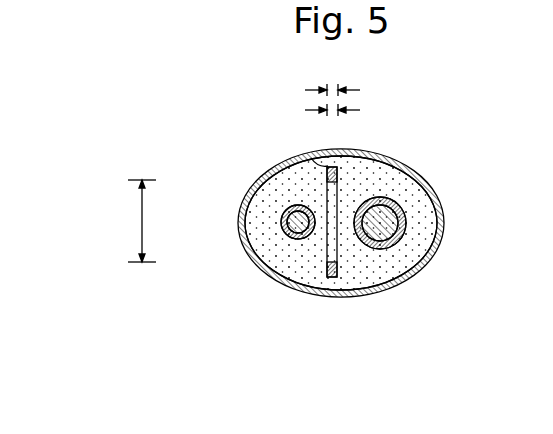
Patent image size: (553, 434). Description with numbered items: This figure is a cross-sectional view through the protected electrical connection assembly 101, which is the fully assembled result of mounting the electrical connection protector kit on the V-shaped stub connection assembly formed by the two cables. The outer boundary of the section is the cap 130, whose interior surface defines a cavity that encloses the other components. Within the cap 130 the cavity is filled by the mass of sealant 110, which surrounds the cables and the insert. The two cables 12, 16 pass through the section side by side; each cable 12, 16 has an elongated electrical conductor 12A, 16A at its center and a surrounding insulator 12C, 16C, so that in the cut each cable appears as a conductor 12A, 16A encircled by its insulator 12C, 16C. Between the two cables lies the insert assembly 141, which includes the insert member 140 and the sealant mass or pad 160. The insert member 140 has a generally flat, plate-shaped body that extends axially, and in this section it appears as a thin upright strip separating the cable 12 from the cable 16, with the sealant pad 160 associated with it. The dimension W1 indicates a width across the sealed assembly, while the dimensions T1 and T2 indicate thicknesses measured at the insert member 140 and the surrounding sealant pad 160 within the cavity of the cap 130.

The protected electrical connection assembly 101 is at (437, 118).
The mass of sealant 110 is at (373, 255).
The cap 130 is at (402, 160).
The insert member 140 is at (312, 158).
The insert assembly 141 is at (330, 163).
The sealant mass or pad 160 is at (345, 158).
The cable 12 is at (287, 207).
The electrical conductor 12A is at (295, 215).
The insulator 12C is at (293, 238).
The cable 16 is at (393, 190).
The electrical conductor 16A is at (403, 204).
The insulator 16C is at (407, 235).
The width dimension W1 is at (141, 221).
The thickness dimension T1 is at (344, 110).
The thickness dimension T2 is at (344, 90).